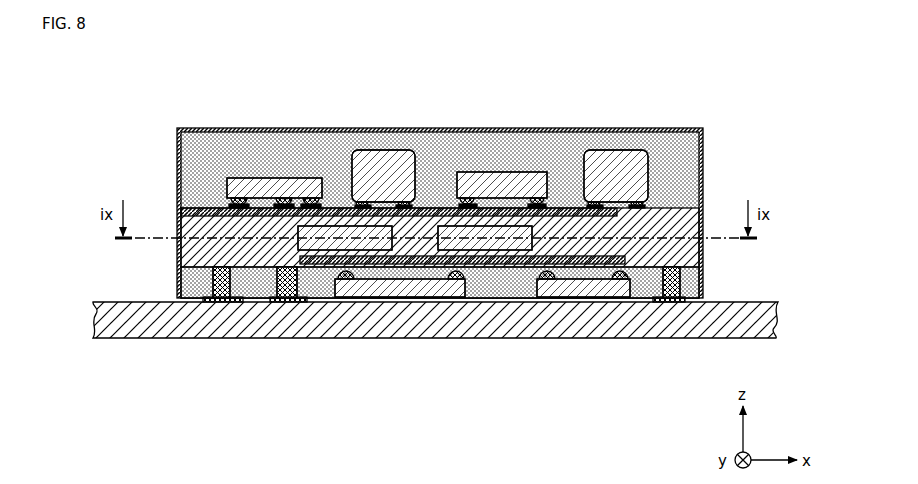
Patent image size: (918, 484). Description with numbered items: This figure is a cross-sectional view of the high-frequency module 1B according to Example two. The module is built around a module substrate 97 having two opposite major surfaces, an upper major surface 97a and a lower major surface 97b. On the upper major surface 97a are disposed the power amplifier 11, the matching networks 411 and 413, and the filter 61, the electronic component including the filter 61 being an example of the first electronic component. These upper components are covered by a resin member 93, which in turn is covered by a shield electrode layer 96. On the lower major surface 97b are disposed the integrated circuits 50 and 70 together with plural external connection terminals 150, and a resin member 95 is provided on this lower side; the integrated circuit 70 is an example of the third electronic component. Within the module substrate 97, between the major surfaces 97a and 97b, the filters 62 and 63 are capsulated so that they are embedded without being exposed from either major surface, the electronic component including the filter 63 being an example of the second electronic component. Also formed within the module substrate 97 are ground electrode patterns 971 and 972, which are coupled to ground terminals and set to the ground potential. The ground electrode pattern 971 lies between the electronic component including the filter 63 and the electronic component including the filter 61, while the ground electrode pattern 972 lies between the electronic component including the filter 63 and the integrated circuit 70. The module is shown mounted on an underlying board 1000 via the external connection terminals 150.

The high-frequency module 1B is at (652, 78).
The shield electrode layer 96 is at (668, 128).
The resin member 93 is at (686, 176).
The module substrate 97 is at (192, 262).
The major surface 97a is at (200, 206).
The major surface 97b is at (186, 278).
The ground electrode pattern 971 is at (230, 216).
The ground electrode pattern 972 is at (590, 257).
The power amplifier 11 is at (262, 177).
The matching network 413 is at (388, 148).
The filter 61 is at (490, 172).
The matching network 411 is at (618, 148).
The filter 62 is at (392, 240).
The filter 63 is at (532, 240).
The resin member 95 is at (705, 272).
The external connection terminal 150 is at (222, 282).
The integrated circuit 70 is at (465, 284).
The integrated circuit 50 is at (630, 284).
The mounting board 1000 is at (426, 340).